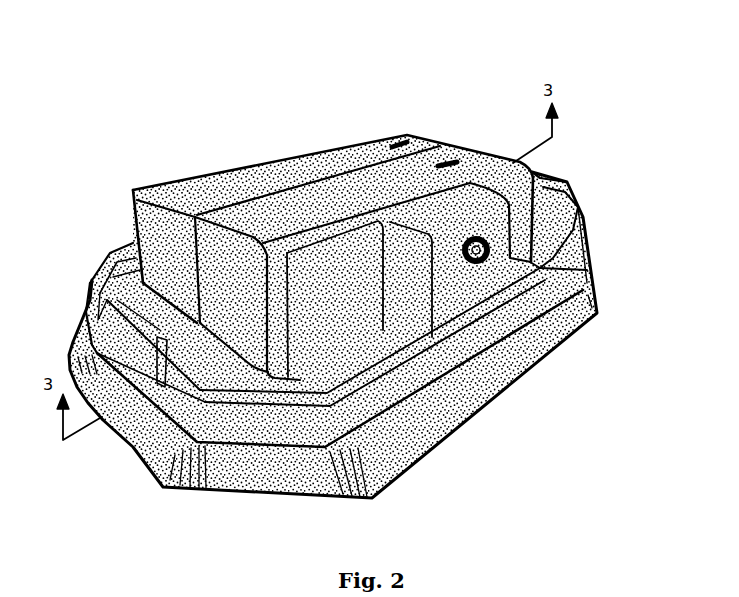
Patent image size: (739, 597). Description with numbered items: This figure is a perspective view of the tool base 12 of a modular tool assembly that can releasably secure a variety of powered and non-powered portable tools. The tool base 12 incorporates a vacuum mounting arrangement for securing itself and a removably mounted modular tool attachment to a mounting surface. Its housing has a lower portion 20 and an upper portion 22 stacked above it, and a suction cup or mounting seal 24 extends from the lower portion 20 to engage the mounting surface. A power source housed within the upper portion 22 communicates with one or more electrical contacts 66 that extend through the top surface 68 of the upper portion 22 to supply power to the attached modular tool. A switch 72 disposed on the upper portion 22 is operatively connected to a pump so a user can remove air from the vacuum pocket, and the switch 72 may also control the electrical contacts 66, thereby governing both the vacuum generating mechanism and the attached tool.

The tool base 12 is at (497, 66).
The lower portion 20 is at (249, 420).
The upper portion 22 is at (208, 183).
The mounting seal 24 is at (467, 403).
The electrical contacts 66 is at (450, 160).
The top surface 68 is at (302, 162).
The switch 72 is at (489, 256).